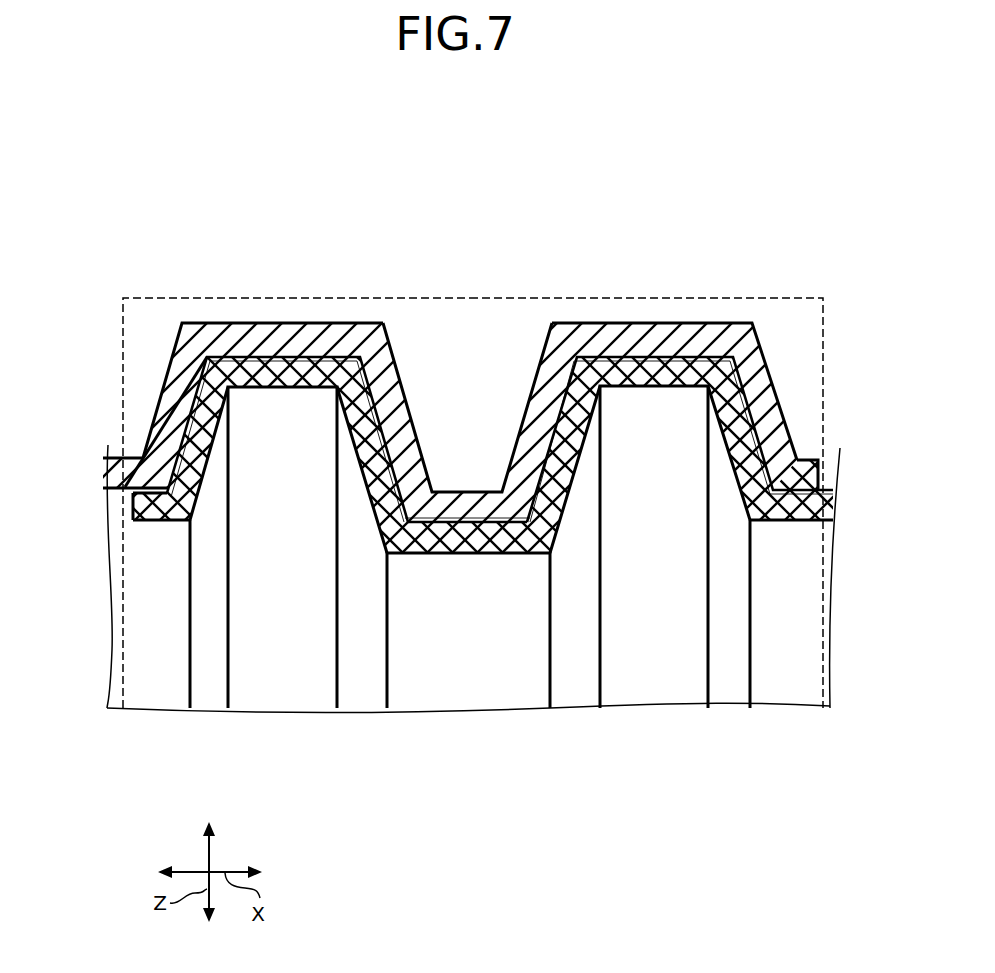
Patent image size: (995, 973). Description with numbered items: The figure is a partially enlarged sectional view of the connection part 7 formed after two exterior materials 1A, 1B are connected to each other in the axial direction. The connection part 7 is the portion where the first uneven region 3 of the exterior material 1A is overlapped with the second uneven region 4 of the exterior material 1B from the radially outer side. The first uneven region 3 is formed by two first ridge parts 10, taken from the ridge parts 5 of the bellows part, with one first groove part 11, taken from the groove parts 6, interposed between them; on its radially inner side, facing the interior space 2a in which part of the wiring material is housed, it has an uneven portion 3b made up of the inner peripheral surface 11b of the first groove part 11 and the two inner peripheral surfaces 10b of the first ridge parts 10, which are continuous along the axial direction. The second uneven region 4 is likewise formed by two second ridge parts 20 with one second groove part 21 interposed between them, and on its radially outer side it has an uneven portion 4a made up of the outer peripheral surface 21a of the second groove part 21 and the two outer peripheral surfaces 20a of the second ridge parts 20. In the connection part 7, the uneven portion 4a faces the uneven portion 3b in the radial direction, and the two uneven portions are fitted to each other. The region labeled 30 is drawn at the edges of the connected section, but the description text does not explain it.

The connection part 7 is at (379, 222).
The first uneven region 3 is at (162, 296).
The second uneven region 4 is at (764, 296).
The exterior material 1A is at (108, 422).
The exterior material 1B is at (836, 422).
The interior space 2a is at (140, 602).
The uneven portion 3b is at (468, 536).
The inner peripheral surface 10b is at (273, 365).
The inner peripheral surface 11b is at (492, 540).
The ridge parts 5 is at (461, 374).
The groove parts 6 is at (462, 374).
The first ridge part 10 is at (585, 325).
The first groove part 11 is at (443, 467).
The second ridge part 20 is at (262, 357).
The second groove part 21 is at (475, 517).
The edge layer 30 is at (812, 457).
The uneven portion 4a is at (500, 357).
The outer peripheral surface 20a is at (713, 243).
The outer peripheral surface 21a is at (457, 522).